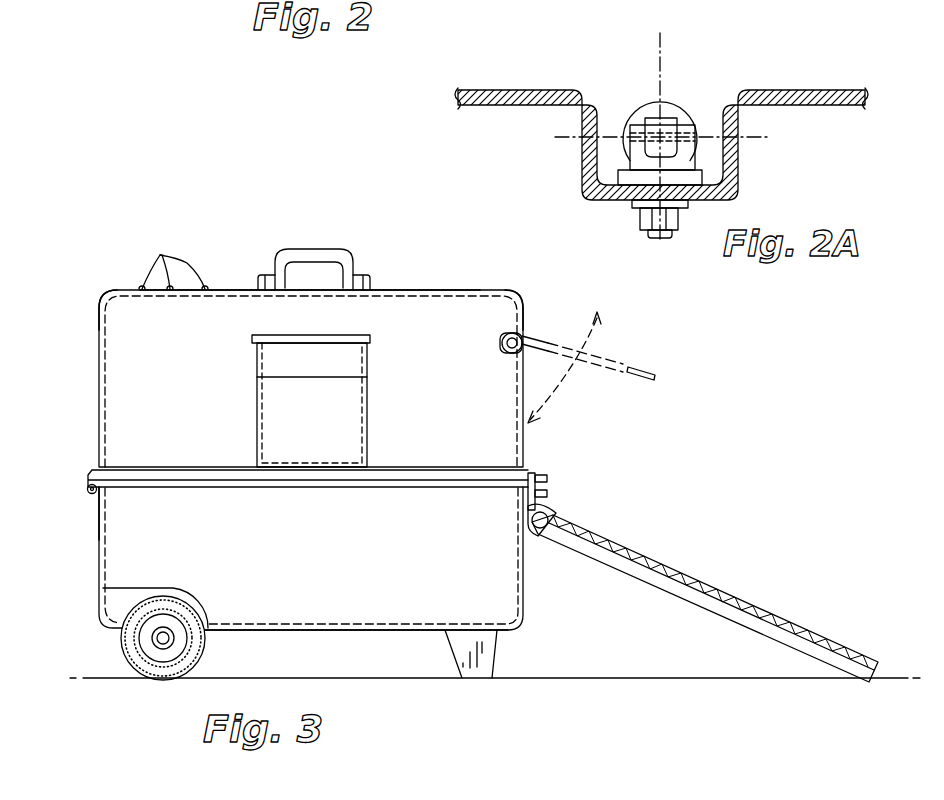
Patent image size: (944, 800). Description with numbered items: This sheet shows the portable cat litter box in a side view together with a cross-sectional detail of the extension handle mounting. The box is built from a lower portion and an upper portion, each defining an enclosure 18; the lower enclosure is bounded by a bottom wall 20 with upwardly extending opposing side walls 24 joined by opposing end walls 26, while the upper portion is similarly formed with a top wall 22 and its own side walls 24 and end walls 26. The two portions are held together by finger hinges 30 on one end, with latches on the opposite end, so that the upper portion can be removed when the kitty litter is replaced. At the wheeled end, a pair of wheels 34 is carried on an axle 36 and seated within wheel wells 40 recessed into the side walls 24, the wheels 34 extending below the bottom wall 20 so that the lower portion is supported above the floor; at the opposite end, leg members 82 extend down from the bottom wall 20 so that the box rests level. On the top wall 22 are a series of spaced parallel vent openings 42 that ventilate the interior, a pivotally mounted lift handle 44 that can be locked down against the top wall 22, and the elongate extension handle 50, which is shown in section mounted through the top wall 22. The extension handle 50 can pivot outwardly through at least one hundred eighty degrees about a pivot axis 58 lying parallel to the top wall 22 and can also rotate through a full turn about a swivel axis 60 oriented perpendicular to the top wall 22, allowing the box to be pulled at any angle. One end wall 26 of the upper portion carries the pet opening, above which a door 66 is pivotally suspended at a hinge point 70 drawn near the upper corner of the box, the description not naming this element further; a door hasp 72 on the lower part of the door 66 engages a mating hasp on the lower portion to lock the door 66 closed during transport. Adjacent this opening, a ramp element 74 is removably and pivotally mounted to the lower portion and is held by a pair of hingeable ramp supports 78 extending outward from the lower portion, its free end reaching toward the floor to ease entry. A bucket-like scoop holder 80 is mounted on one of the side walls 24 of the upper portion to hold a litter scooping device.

In FIG. 3, the enclosure 18 is at (130, 357).
In FIG. 3, the bottom wall 20 is at (318, 632).
In FIG. 2A, the top wall 22 is at (797, 91).
In FIG. 3, the top wall 22 is at (418, 290).
In FIG. 3, the side walls 24 is at (452, 424).
In FIG. 3, the end walls 26 is at (98, 330).
In FIG. 3, the finger hinges 30 is at (88, 492).
In FIG. 3, the wheels 34 is at (145, 678).
In FIG. 3, the axle 36 is at (152, 642).
In FIG. 3, the wheel wells 40 is at (113, 598).
In FIG. 3, the vent openings 42 is at (160, 257).
In FIG. 3, the lift handle 44 is at (312, 250).
In FIG. 2A, the extension handle 50 is at (635, 115).
In FIG. 2A, the pivot axis 58 is at (755, 138).
In FIG. 2A, the swivel axis 60 is at (662, 58).
In FIG. 3, the door 66 is at (522, 447).
In FIG. 3, the hinge pin 70 is at (502, 338).
In FIG. 3, the door hasp 72 is at (548, 480).
In FIG. 3, the ramp element 74 is at (687, 572).
In FIG. 3, the ramp supports 78 is at (537, 537).
In FIG. 3, the scoop holder 80 is at (330, 424).
In FIG. 3, the leg members 82 is at (480, 670).